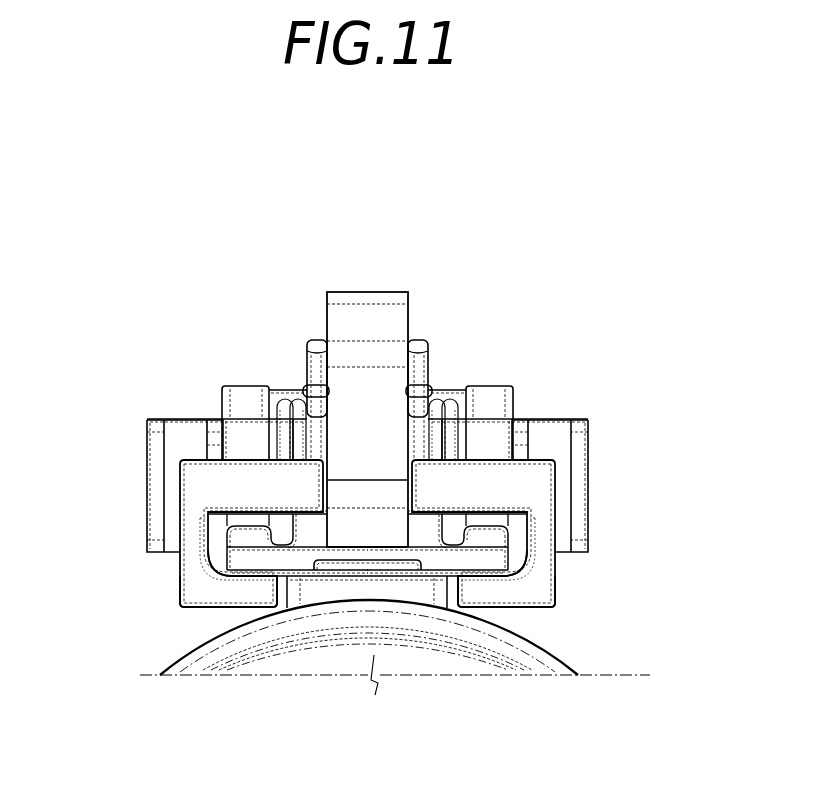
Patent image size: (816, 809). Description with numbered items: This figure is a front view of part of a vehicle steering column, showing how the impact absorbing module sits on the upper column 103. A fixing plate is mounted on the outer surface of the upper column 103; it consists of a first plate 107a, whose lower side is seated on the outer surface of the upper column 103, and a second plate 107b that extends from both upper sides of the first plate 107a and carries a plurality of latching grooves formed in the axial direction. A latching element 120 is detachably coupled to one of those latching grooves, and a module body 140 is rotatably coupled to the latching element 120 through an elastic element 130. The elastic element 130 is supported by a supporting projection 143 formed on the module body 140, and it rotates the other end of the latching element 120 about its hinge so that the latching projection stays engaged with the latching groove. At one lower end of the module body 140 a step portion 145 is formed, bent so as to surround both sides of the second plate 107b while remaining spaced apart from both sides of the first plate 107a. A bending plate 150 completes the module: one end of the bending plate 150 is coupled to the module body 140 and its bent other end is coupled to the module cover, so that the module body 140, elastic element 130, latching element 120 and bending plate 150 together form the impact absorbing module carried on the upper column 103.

The upper column 103 is at (395, 668).
The first plate 107a is at (331, 597).
The second plate 107b is at (438, 596).
The latching element 120 is at (366, 328).
The elastic element 130 is at (423, 365).
The module body 140 is at (200, 500).
The supporting projection 143 is at (262, 428).
The step portion 145 is at (250, 593).
The bending plate 150 is at (158, 446).